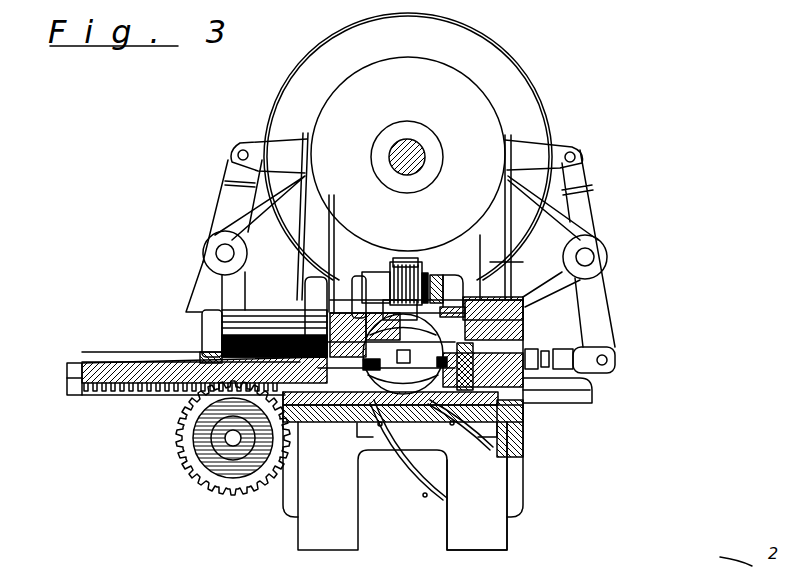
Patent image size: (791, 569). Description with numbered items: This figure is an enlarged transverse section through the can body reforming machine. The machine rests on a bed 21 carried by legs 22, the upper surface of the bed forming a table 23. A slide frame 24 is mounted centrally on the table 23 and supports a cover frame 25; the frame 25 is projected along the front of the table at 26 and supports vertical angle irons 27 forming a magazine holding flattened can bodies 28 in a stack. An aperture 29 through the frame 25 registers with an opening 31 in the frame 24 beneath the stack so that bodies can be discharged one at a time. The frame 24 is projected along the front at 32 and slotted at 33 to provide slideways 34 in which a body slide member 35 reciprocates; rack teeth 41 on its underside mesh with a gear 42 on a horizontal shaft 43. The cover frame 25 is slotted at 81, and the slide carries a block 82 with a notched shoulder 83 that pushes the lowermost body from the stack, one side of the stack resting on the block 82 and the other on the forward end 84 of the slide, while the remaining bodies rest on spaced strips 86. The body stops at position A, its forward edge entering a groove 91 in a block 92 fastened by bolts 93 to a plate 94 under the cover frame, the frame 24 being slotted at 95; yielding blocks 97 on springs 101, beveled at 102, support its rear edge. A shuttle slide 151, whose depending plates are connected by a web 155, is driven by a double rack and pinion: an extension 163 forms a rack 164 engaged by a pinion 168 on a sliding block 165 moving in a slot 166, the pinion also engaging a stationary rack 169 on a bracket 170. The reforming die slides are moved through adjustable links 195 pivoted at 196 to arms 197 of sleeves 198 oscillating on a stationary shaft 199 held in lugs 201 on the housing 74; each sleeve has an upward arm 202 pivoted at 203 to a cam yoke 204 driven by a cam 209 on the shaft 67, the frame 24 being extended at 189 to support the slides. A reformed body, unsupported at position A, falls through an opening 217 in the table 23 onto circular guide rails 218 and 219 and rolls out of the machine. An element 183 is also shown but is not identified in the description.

The disk rim 183 is at (303, 63).
The cam 209 is at (408, 154).
The shaft 67 is at (404, 140).
The housing 74 is at (304, 187).
The cam yoke 204 is at (280, 142).
The pivotal connection 203 is at (238, 153).
The upwardly extending arm 202 is at (222, 198).
The spaced lugs 201 is at (655, 222).
The sleeve 198 is at (214, 235).
The stationary shaft 199 is at (216, 252).
The arm 197 is at (203, 296).
The pivotal connection 196 is at (617, 360).
The adjustable link 195 is at (600, 342).
The frame extension 189 is at (583, 390).
The legs 22 is at (495, 530).
The beveled upper surface 102 is at (360, 298).
The upward extension of shuttle slide 163 is at (376, 272).
The rack 164 is at (392, 268).
The pinion 168 is at (403, 280).
The sliding block 165 is at (428, 287).
The slot 166 is at (437, 290).
The second rack 169 is at (477, 285).
The position A is at (470, 317).
The shuttle slide 151 is at (490, 255).
The bracket 170 is at (522, 297).
The cover frame 25 is at (525, 322).
The groove 91 is at (525, 333).
The blocks 97 is at (370, 390).
The flattened can bodies 28 is at (282, 305).
The aperture 29 is at (259, 308).
The vertical angle irons 27 is at (230, 284).
The slideways 34 is at (73, 372).
The body slide member 35 is at (102, 368).
The slot 33 is at (135, 393).
The frame projection 32 is at (68, 385).
The rack teeth 41 is at (117, 388).
The spaced strips 86 is at (137, 350).
The block 82 is at (213, 357).
The frame projection 26 is at (198, 350).
The notched shoulder 83 is at (220, 357).
The slide frame 24 is at (268, 388).
The gear 42 is at (193, 467).
The horizontal shaft 43 is at (230, 438).
The opening 31 is at (283, 378).
The circular guide rail 218 is at (436, 500).
The circular guide rail 219 is at (483, 450).
The opening 217 is at (423, 413).
The spring 101 is at (352, 412).
The slot 81 is at (318, 425).
The forward end of slide 84 is at (308, 425).
The grooved block 92 is at (525, 385).
The plate 94 is at (527, 400).
The bolts 93 is at (525, 407).
The slot 95 is at (525, 413).
The table 23 is at (527, 447).
The bed 21 is at (528, 465).
The web 155 is at (717, 555).